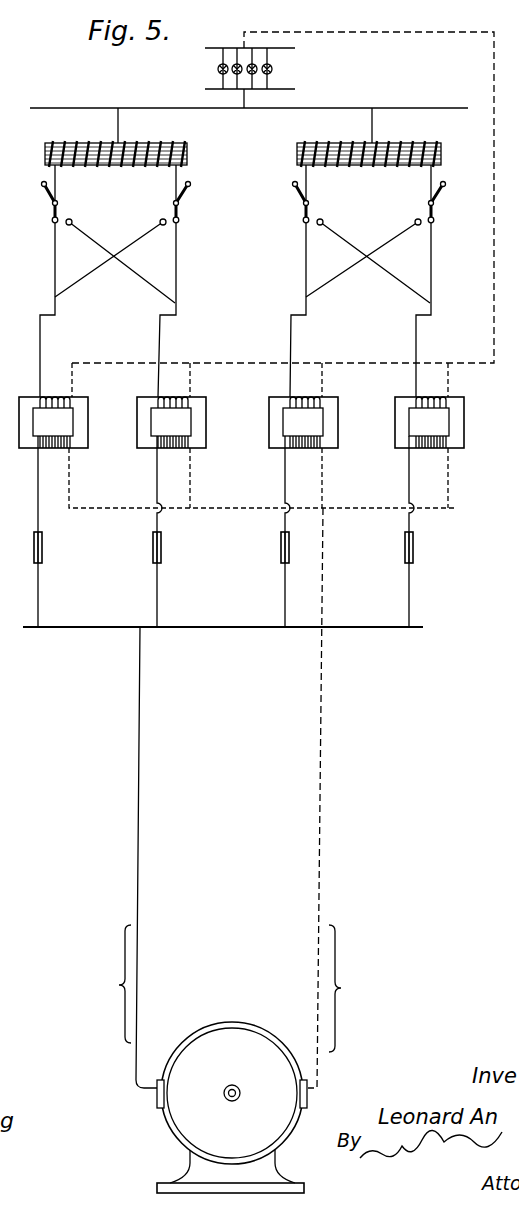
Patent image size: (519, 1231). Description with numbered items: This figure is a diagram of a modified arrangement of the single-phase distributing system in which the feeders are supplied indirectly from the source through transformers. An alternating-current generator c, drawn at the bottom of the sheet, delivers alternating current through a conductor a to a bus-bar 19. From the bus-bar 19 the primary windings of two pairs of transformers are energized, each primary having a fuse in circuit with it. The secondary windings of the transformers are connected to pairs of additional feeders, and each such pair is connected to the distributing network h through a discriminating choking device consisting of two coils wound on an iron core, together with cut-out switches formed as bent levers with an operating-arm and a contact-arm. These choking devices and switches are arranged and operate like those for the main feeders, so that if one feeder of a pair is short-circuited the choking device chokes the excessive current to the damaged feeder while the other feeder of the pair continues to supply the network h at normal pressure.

The distributing network h is at (251, 78).
The bus-bar 19 is at (204, 626).
The conductor a is at (147, 857).
The alternating-current generator c is at (232, 1107).